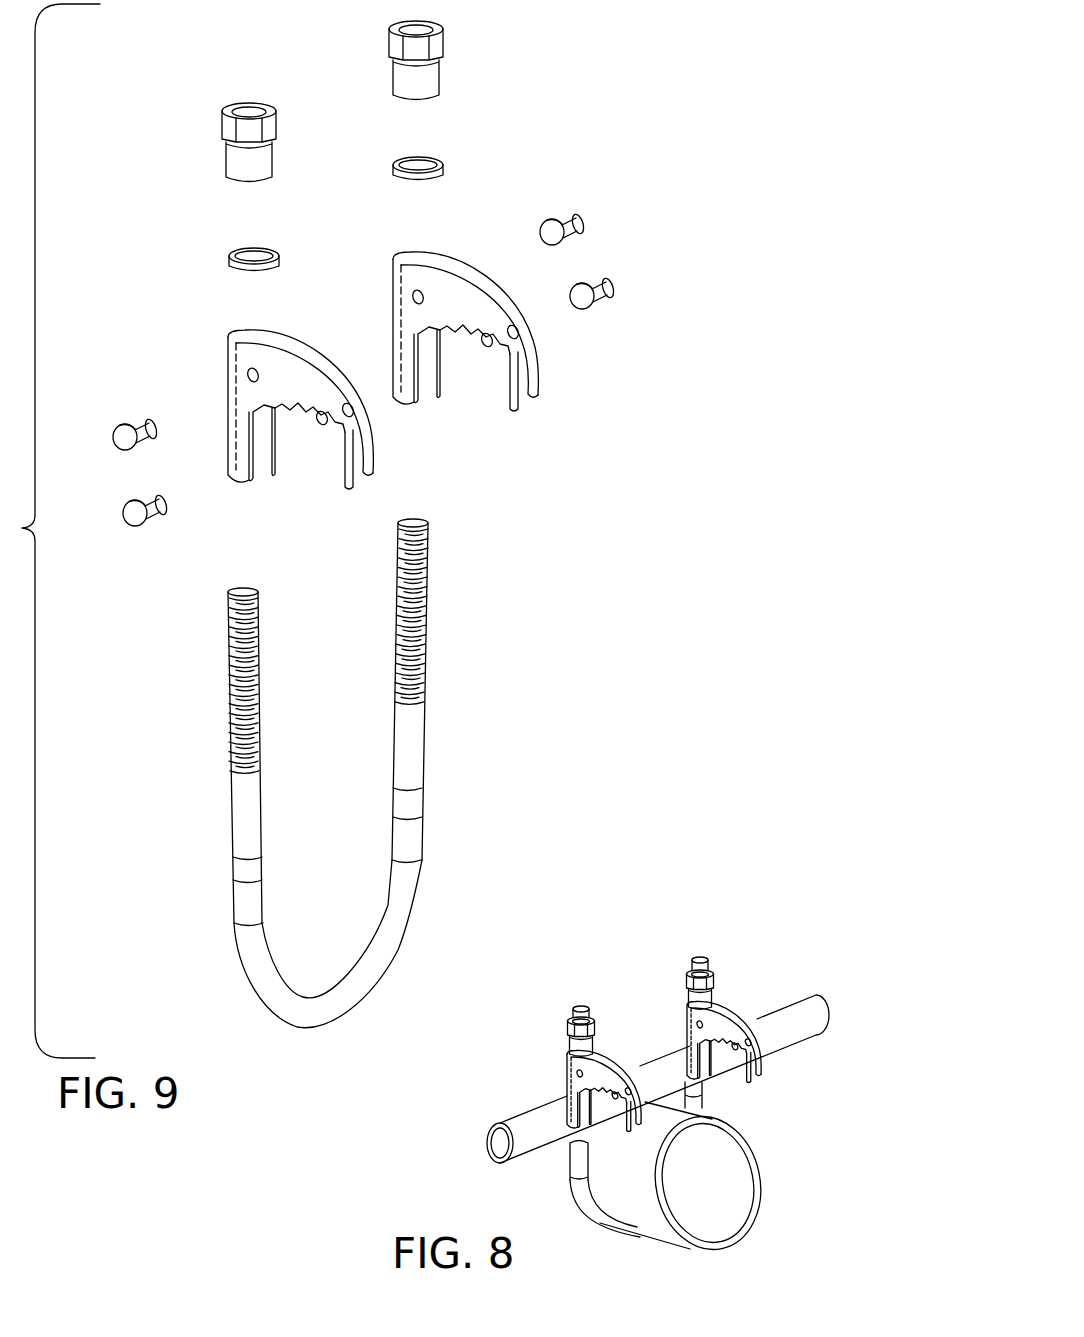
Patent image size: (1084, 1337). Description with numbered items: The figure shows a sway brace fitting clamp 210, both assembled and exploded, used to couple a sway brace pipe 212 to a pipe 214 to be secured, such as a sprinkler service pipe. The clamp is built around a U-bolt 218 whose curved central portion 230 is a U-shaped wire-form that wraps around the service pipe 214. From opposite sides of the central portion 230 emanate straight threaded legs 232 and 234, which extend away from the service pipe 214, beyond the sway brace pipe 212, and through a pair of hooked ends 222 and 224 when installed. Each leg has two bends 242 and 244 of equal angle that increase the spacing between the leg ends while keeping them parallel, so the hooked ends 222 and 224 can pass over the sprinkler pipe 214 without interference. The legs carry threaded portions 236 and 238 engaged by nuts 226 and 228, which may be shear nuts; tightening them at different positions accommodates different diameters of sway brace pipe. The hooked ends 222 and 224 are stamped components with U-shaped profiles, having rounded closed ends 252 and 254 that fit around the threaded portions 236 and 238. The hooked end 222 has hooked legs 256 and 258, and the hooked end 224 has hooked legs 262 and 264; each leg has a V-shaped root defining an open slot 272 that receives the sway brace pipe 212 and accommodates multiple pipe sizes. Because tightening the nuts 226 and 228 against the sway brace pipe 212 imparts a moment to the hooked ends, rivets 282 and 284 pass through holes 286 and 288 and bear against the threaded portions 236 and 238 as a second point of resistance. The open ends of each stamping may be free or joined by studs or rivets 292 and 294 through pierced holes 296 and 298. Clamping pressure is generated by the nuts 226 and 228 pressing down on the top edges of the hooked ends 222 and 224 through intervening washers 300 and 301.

In FIG. 9, the sway brace fitting clamp 210 is at (162, 213).
In FIG. 8, the sway brace fitting clamp 210 is at (553, 1052).
In FIG. 8, the sway brace pipe 212 is at (530, 1142).
In FIG. 8, the pipe to be secured 214 is at (705, 1221).
In FIG. 9, the U-bolt 218 is at (236, 1007).
In FIG. 8, the U-bolt 218 is at (579, 1225).
In FIG. 9, the hooked end 222 is at (210, 323).
In FIG. 8, the hooked end 222 is at (562, 1072).
In FIG. 9, the hooked end 224 is at (530, 287).
In FIG. 8, the hooked end 224 is at (738, 1000).
In FIG. 9, the nut 226 is at (229, 112).
In FIG. 8, the nut 226 is at (594, 1021).
In FIG. 9, the nut 228 is at (430, 20).
In FIG. 8, the nut 228 is at (712, 975).
In FIG. 9, the curved central portion 230 is at (297, 1022).
In FIG. 8, the curved central portion 230 is at (613, 1230).
In FIG. 9, the threaded leg 232 is at (215, 718).
In FIG. 9, the threaded leg 234 is at (462, 642).
In FIG. 9, the threaded portion 236 is at (228, 652).
In FIG. 8, the threaded portion 236 is at (586, 1004).
In FIG. 9, the threaded portion 238 is at (444, 574).
In FIG. 8, the threaded portion 238 is at (703, 957).
In FIG. 9, the bend 242 is at (440, 797).
In FIG. 9, the bend 244 is at (420, 818).
In FIG. 9, the rounded closed end 252 is at (226, 333).
In FIG. 9, the rounded closed end 254 is at (393, 250).
In FIG. 9, the hooked leg 256 is at (250, 393).
In FIG. 9, the hooked leg 258 is at (293, 341).
In FIG. 9, the hooked leg 262 is at (390, 275).
In FIG. 9, the hooked leg 264 is at (460, 268).
In FIG. 9, the open slot 272 is at (284, 490).
In FIG. 9, the rivet 282 is at (111, 442).
In FIG. 9, the rivet 284 is at (588, 222).
In FIG. 9, the hole 286 is at (248, 373).
In FIG. 9, the hole 288 is at (410, 293).
In FIG. 9, the stud or rivet 292 is at (120, 508).
In FIG. 9, the stud or rivet 294 is at (623, 285).
In FIG. 9, the pierced hole 296 is at (372, 476).
In FIG. 9, the pierced hole 298 is at (522, 336).
In FIG. 9, the washer 300 is at (236, 253).
In FIG. 9, the washer 301 is at (443, 162).